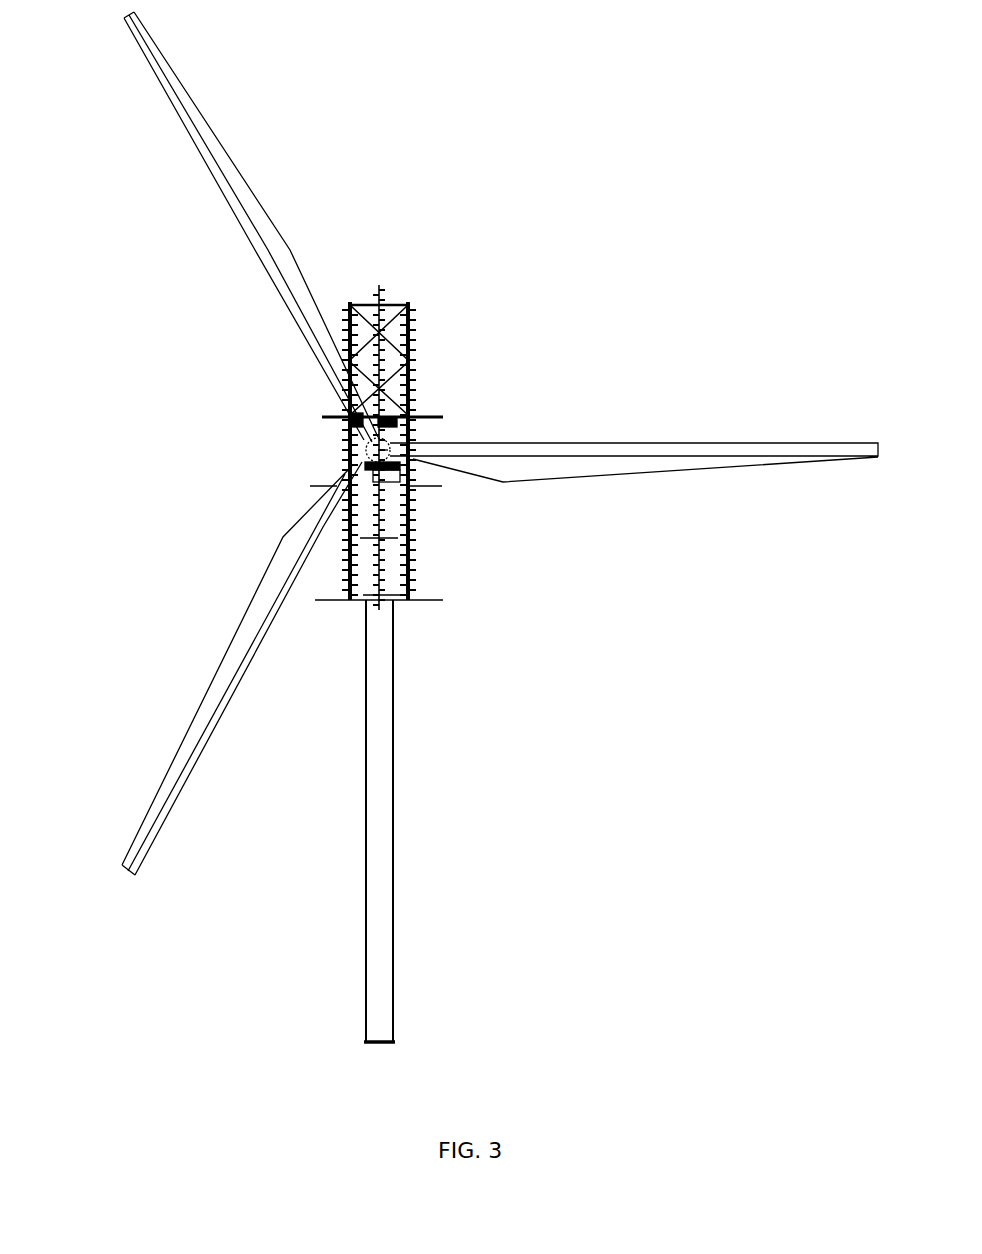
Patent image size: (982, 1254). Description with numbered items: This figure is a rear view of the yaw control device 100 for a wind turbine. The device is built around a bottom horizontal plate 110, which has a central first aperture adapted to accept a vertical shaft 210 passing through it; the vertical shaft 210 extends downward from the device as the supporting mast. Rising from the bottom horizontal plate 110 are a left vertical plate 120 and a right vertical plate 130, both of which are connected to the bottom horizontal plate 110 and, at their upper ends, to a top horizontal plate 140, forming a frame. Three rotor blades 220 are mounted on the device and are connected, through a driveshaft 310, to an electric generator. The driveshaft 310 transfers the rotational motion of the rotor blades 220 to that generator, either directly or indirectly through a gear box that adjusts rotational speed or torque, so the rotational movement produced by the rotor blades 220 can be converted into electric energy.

The yaw control device 100 is at (716, 166).
The bottom horizontal plate 110 is at (412, 598).
The left vertical plate 120 is at (345, 458).
The right vertical plate 130 is at (408, 362).
The top horizontal plate 140 is at (408, 305).
The vertical shaft 210 is at (367, 897).
The rotor blades 220 is at (237, 167).
The driveshaft 310 is at (388, 451).